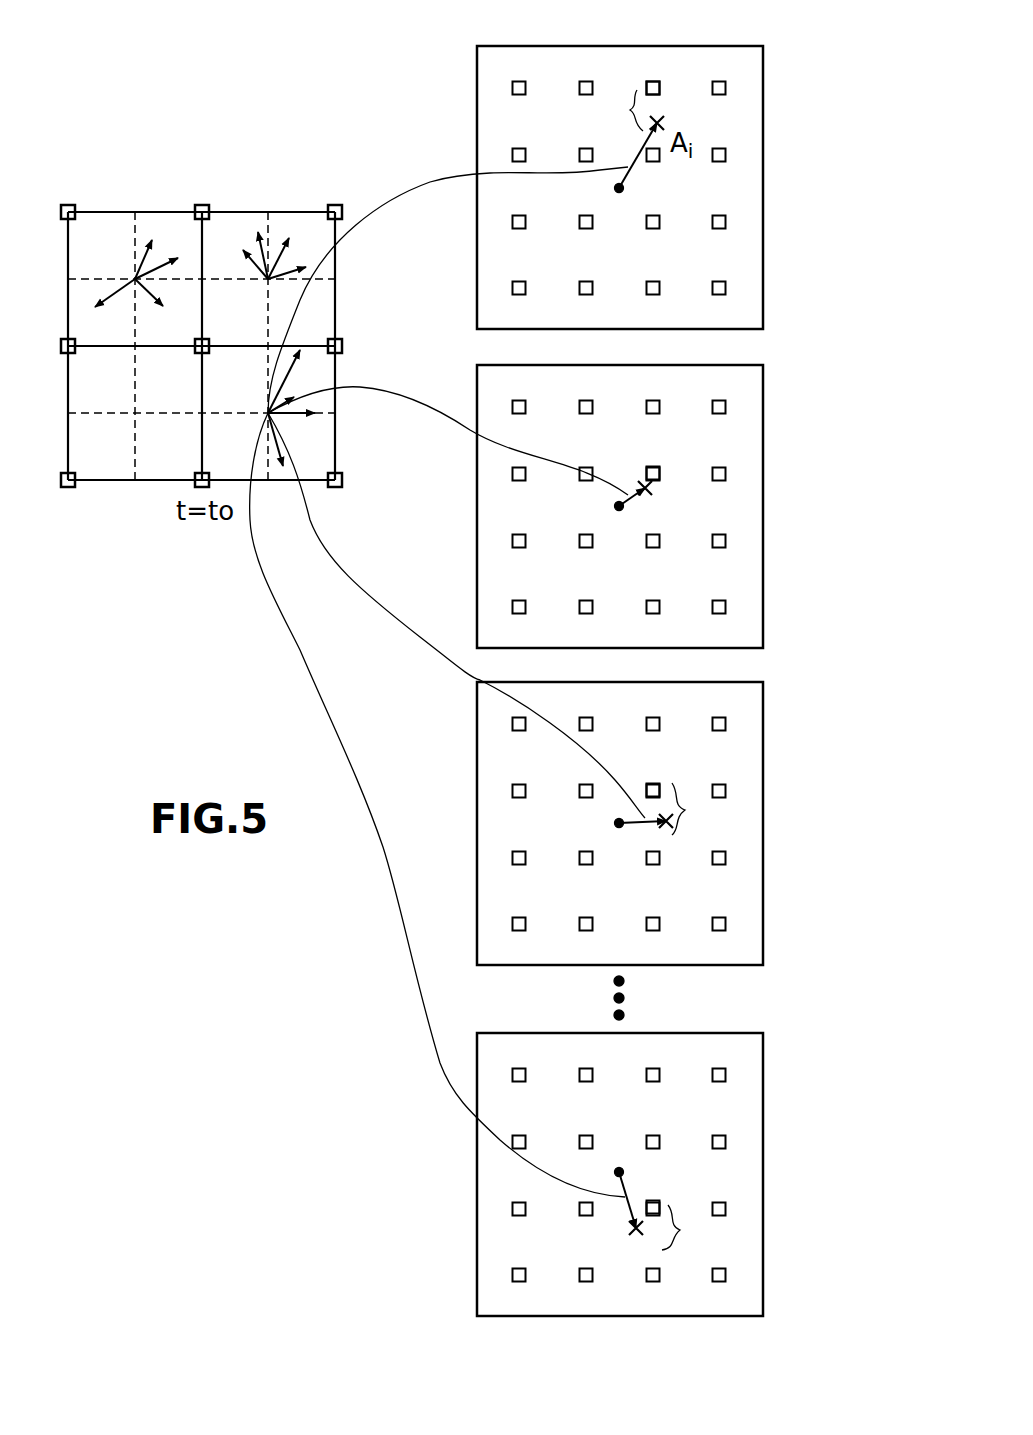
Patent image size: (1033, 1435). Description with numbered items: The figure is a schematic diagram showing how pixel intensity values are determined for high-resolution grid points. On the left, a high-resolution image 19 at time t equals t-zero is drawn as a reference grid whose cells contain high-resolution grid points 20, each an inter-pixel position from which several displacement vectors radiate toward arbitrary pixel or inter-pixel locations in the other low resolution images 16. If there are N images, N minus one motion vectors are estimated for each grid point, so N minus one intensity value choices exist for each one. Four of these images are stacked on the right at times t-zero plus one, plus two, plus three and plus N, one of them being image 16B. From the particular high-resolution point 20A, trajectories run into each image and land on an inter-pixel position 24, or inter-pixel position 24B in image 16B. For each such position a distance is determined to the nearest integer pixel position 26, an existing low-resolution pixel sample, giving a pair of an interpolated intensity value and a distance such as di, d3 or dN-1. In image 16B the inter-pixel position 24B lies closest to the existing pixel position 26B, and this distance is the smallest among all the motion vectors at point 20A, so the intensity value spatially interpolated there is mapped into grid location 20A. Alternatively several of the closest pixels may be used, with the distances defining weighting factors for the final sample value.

The high-resolution image 19 is at (104, 212).
The high-resolution grid point 20 is at (135, 279).
The high-resolution point 20A is at (268, 413).
The low resolution image 16 is at (763, 93).
The image 16B is at (763, 410).
The inter-pixel position 24 is at (664, 123).
The inter-pixel position 24B is at (652, 492).
The nearest integer pixel position 26 is at (653, 81).
The existing pixel position 26B is at (660, 470).
The distance di is at (620, 114).
The distance d3 is at (695, 809).
The distance dN-1 is at (700, 1231).